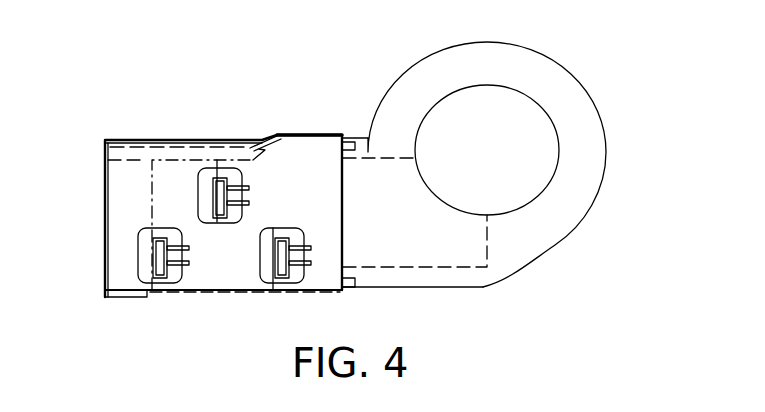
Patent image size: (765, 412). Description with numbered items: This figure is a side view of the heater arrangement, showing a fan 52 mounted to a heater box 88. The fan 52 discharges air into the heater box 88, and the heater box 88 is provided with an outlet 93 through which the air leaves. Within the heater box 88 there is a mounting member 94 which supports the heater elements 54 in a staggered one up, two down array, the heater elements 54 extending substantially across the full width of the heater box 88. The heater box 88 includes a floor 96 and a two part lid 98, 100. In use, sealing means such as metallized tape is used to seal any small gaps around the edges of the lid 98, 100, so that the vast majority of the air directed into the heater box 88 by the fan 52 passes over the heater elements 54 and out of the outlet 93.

The fan 52 is at (597, 150).
The heater element 54 is at (243, 207).
The heater box 88 is at (344, 219).
The outlet 93 is at (104, 236).
The mounting member 94 is at (152, 188).
The floor 96 is at (330, 291).
The lid 98 is at (167, 140).
The lid 100 is at (258, 150).